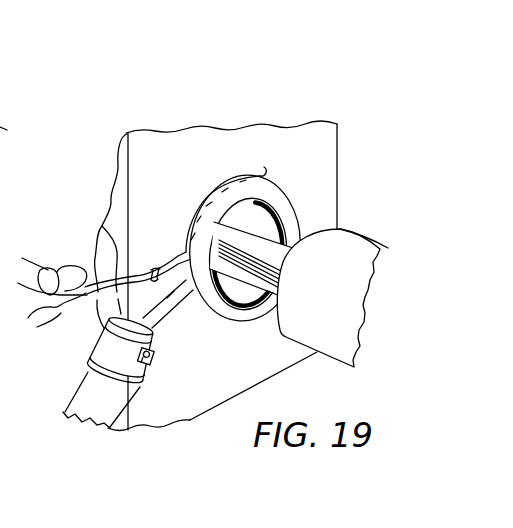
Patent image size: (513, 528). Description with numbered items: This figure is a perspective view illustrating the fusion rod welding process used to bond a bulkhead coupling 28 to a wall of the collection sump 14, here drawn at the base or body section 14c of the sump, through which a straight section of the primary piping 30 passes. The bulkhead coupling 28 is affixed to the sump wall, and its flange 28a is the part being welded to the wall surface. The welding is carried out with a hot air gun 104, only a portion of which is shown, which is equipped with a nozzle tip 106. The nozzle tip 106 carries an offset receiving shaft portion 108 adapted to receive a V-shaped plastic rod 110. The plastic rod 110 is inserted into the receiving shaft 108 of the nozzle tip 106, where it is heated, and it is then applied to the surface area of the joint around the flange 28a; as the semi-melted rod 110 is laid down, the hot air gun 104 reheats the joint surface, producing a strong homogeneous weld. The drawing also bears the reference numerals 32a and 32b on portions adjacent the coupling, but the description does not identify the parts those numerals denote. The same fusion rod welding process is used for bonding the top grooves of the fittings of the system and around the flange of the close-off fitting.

The collection sump 14 is at (256, 240).
The base or body section 14c is at (325, 158).
The bulkhead coupling 28 is at (283, 220).
The flange 28a is at (258, 192).
The primary piping 30 is at (256, 302).
The cylinder housing 32a is at (348, 260).
The cylinder housing portion 32b is at (21, 158).
The hot air gun 104 is at (103, 377).
The nozzle tip 106 is at (178, 290).
The offset receiving shaft portion 108 is at (167, 257).
The V-shaped plastic rod 110 is at (102, 226).